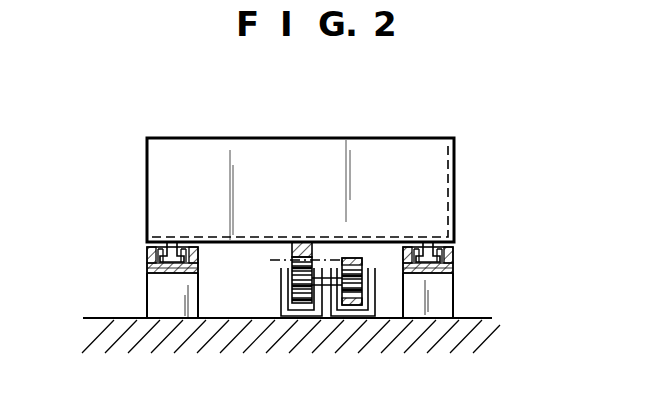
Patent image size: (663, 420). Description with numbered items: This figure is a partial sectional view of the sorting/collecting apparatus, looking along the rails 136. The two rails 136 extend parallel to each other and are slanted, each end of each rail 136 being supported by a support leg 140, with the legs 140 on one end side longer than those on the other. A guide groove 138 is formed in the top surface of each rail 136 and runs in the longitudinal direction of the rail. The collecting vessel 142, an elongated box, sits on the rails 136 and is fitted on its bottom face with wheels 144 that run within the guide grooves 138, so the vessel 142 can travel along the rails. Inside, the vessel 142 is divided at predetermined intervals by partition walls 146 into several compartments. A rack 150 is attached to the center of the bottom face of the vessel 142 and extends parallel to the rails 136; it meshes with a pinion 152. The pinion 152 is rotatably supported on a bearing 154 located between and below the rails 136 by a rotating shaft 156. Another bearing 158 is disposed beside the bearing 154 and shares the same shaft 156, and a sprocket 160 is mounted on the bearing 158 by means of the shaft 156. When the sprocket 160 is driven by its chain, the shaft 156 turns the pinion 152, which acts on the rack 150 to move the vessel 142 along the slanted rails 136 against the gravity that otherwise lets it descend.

The rail 136 is at (147, 262).
The guide groove 138 is at (160, 244).
The support leg 140 is at (147, 300).
The collecting vessel 142 is at (455, 178).
The wheel 144 is at (453, 275).
The partition wall 146 is at (198, 268).
The rack 150 is at (302, 240).
The pinion 152 is at (298, 308).
The bearing 154 is at (278, 306).
The rotating shaft 156 is at (320, 305).
The bearing 158 is at (380, 305).
The sprocket 160 is at (353, 307).